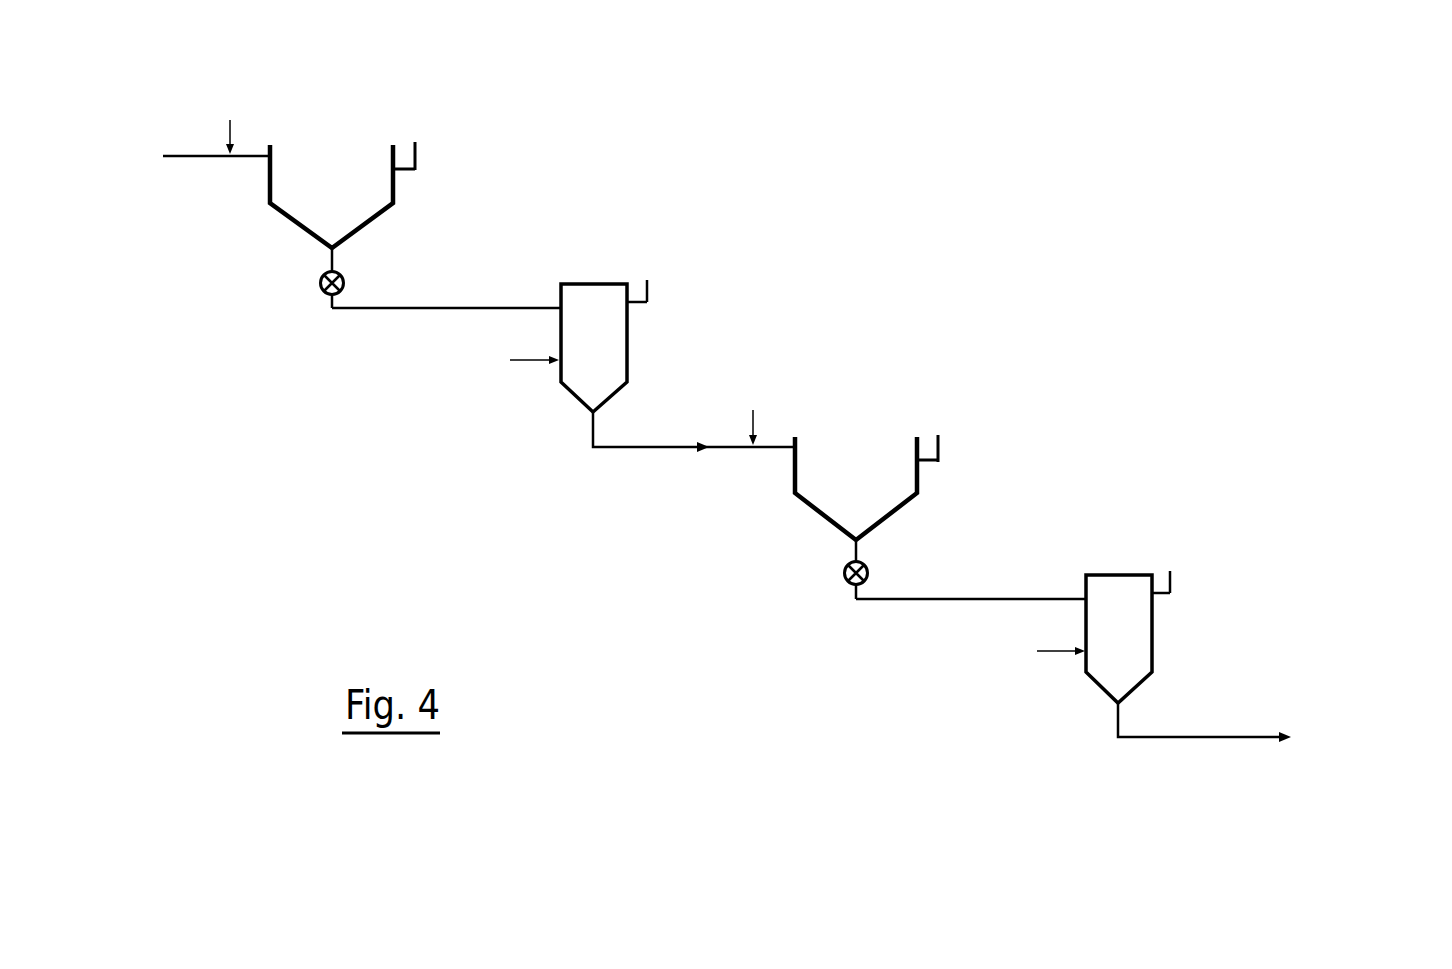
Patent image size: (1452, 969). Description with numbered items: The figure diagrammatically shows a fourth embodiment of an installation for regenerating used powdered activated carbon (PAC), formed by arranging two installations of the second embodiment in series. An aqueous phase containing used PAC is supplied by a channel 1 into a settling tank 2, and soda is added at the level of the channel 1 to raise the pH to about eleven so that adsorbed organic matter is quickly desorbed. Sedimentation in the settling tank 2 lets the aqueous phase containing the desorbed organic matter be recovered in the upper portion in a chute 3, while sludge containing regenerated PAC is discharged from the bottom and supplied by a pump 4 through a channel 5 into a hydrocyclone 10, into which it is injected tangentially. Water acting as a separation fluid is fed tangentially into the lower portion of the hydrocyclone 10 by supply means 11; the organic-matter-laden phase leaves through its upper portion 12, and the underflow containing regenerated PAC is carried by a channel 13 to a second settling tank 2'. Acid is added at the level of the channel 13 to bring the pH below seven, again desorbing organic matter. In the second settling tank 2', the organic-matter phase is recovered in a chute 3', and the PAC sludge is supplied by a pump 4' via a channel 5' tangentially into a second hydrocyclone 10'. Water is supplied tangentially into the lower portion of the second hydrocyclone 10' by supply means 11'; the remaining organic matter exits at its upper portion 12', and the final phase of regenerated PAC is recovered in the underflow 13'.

The channel 1 is at (208, 163).
The settling tank 2 is at (292, 157).
The chute 3 is at (455, 153).
The pump 4 is at (280, 278).
The channel 5 is at (446, 257).
The hydrocyclone 10 is at (602, 309).
The supply means 11 is at (497, 394).
The upper portion 12 is at (694, 292).
The channel 13 is at (694, 400).
The second settling tank 2' is at (821, 449).
The chute 3' is at (981, 445).
The pump 4' is at (800, 569).
The channel 5' is at (971, 548).
The second hydrocyclone 10' is at (1130, 600).
The supply means 11' is at (1021, 685).
The upper portion 12' is at (1223, 582).
The underflow 13' is at (1271, 690).